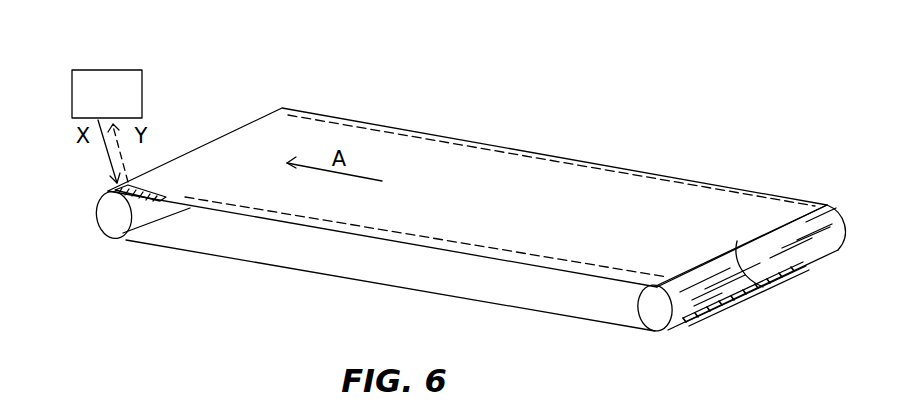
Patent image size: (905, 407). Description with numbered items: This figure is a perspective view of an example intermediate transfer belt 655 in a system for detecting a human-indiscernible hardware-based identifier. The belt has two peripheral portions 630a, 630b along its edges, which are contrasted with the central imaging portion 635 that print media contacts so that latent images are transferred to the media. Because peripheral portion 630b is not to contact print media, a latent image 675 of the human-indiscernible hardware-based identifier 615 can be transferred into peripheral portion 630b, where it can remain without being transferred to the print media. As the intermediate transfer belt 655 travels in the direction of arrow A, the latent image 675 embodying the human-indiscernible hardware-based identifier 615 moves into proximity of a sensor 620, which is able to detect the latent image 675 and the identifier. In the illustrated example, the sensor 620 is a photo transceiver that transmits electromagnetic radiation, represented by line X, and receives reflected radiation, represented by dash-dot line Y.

The intermediate transfer belt 655 is at (415, 84).
The peripheral portion 630a is at (295, 108).
The peripheral portion 630b is at (550, 264).
The human-indiscernible hardware-based identifier 615 is at (112, 189).
The imaging portion 635 is at (767, 285).
The latent image 675 is at (165, 197).
The sensor 620 is at (107, 126).